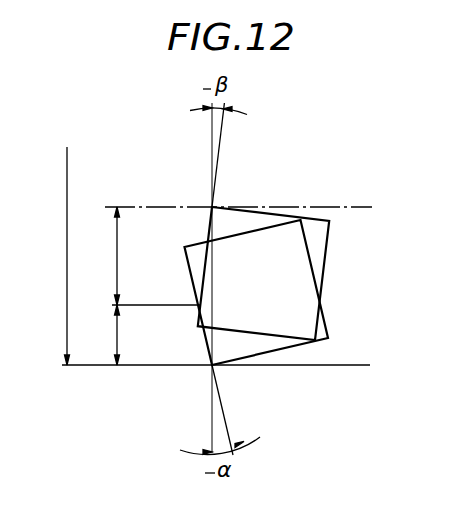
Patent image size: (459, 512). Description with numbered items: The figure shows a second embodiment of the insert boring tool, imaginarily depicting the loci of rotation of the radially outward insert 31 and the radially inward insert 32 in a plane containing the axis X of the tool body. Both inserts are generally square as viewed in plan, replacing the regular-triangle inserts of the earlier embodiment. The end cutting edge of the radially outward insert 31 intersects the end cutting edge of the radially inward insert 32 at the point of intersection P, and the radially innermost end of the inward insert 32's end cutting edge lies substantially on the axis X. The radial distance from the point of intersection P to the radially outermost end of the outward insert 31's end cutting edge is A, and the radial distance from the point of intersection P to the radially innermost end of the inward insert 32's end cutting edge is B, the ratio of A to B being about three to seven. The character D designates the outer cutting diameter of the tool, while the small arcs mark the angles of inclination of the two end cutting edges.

The radially outward insert 31 is at (277, 351).
The radially inward insert 32 is at (275, 213).
The point of intersection P is at (200, 305).
The axis of the tool body X is at (327, 207).
The outer cutting diameter D is at (49, 256).
The radial distance between the point of intersection and the radially outermost end A is at (109, 335).
The radial distance between the point of intersection and the radially innermost end B is at (110, 256).